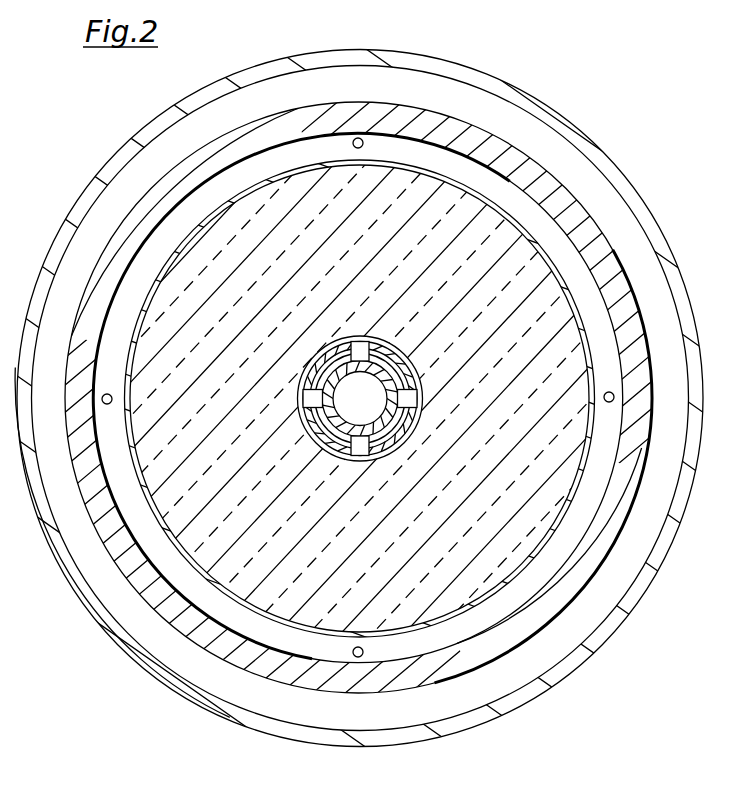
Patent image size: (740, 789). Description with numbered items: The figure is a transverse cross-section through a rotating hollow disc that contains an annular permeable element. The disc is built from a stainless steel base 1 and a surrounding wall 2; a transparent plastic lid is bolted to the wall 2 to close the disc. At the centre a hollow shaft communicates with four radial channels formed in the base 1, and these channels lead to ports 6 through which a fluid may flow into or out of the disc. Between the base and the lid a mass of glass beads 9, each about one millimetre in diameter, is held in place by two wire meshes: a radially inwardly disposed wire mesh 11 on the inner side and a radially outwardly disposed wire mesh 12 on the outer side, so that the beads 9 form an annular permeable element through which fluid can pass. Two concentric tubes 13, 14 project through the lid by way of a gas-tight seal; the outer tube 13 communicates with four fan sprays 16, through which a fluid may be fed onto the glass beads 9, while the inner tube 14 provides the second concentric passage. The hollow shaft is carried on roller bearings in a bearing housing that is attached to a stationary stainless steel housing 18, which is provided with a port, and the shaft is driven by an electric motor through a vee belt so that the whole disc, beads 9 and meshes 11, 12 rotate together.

The base 1 is at (513, 608).
The wall 2 is at (608, 530).
The ports 6 is at (358, 138).
The glass beads 9 is at (183, 561).
The radially inwardly disposed wire mesh 11 is at (308, 437).
The radially outwardly disposed wire mesh 12 is at (147, 502).
The outer tube 13 is at (300, 280).
The inner tube 14 is at (575, 198).
The fan sprays 16 is at (298, 400).
The stationary housing 18 is at (158, 670).